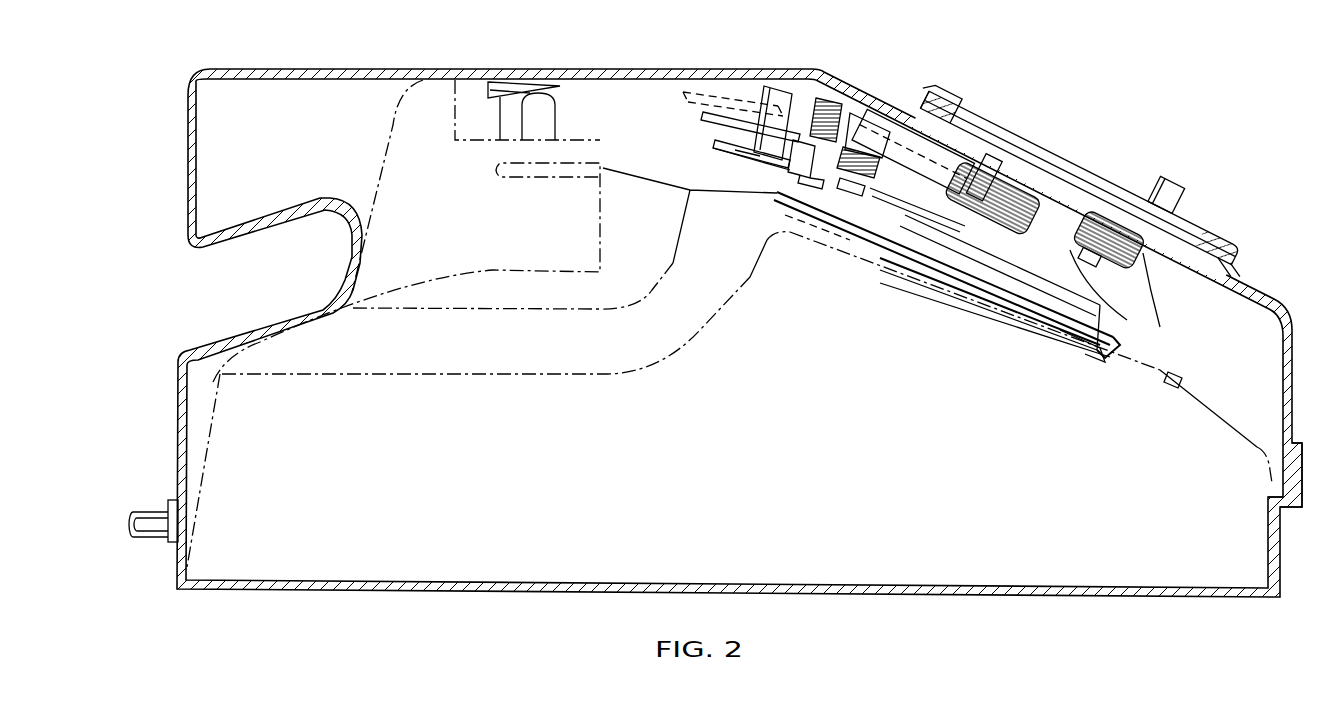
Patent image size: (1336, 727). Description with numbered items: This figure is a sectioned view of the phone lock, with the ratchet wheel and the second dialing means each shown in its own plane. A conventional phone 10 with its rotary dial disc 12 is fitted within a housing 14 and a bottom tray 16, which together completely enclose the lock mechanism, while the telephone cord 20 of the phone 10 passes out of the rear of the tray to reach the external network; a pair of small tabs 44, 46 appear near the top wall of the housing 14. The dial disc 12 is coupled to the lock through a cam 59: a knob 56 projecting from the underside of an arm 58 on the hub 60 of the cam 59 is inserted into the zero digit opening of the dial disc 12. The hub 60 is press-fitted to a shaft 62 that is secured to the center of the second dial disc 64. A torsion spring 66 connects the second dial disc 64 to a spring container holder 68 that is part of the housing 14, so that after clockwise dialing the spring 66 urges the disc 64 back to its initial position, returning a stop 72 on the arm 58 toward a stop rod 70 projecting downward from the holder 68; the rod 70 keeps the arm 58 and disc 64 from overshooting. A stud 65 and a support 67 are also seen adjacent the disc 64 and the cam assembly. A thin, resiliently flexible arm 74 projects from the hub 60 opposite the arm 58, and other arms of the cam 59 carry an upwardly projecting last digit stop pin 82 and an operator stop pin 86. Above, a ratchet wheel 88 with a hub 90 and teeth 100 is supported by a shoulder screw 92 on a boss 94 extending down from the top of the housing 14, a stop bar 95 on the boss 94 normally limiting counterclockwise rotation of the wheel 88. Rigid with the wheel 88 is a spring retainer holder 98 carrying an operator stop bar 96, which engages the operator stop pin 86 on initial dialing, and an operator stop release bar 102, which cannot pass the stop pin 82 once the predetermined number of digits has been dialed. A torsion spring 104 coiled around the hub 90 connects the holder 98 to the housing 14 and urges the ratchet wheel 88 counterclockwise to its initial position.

The phone 10 is at (748, 278).
The rotary dial 12 is at (1180, 378).
The housing 14 is at (1273, 303).
The bottom tray 16 is at (1277, 548).
The telephone cord 20 is at (147, 512).
The latch tab 44 is at (500, 102).
The latch tab 46 is at (598, 113).
The knob 56 is at (1100, 348).
The arm 58 is at (1100, 310).
The cam 59 is at (1077, 285).
The hub 60 is at (923, 273).
The shaft 62 is at (1023, 283).
The second dial disc 64 is at (1198, 237).
The stud 65 is at (1180, 197).
The torsion spring 66 is at (1143, 267).
The support 67 is at (1087, 323).
The spring container holder 68 is at (1143, 277).
The stop rod 70 is at (1127, 320).
The stop 72 is at (1160, 327).
The thin arm 74 is at (920, 200).
The stop pin 82 is at (934, 194).
The operator stop pin 86 is at (1017, 227).
The ratchet wheel 88 is at (790, 230).
The hub 90 is at (793, 153).
The shoulder screw 92 is at (827, 193).
The boss 94 is at (843, 153).
The stop bar 95 is at (932, 103).
The operator stop bar 96 is at (697, 99).
The spring retainer holder 98 is at (775, 125).
The teeth 100 is at (717, 143).
The operator stop release bar 102 is at (703, 120).
The torsion spring 104 is at (743, 147).